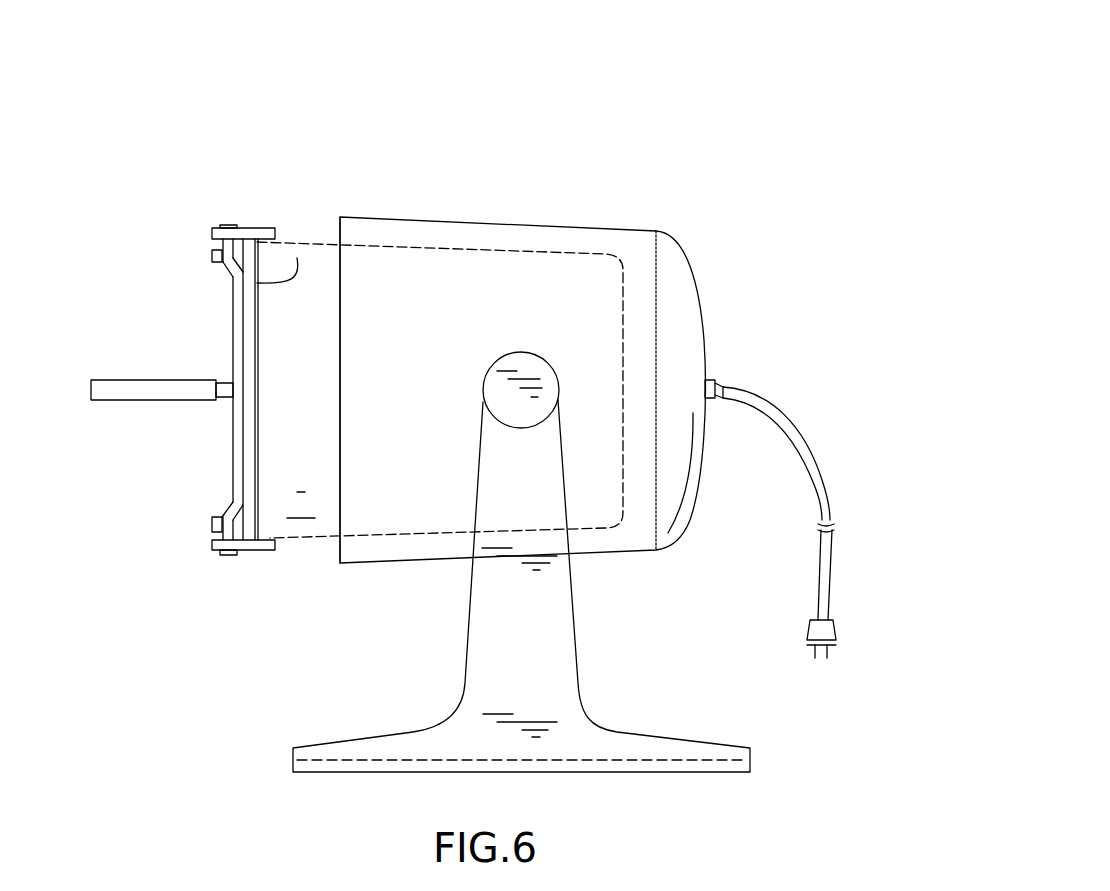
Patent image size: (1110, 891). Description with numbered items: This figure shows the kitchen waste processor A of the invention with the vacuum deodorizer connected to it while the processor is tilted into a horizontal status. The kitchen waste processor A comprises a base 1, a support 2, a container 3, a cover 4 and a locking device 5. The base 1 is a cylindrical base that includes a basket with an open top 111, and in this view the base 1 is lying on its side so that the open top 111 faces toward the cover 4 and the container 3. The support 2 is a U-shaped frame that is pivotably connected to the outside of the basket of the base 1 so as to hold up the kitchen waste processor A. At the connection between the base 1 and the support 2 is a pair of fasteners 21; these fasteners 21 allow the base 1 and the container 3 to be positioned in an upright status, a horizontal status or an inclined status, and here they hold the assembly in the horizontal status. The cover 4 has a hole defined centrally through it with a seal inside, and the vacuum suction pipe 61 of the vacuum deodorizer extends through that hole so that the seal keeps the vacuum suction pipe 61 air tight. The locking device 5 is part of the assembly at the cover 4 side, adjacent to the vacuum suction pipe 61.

The kitchen waste processor A is at (736, 88).
The base 1 is at (703, 337).
The open top 111 is at (340, 228).
The support 2 is at (598, 629).
The fasteners 21 is at (521, 352).
The container 3 is at (298, 545).
The cover 4 is at (297, 258).
The locking device 5 is at (228, 452).
The vacuum suction pipe 61 is at (146, 378).